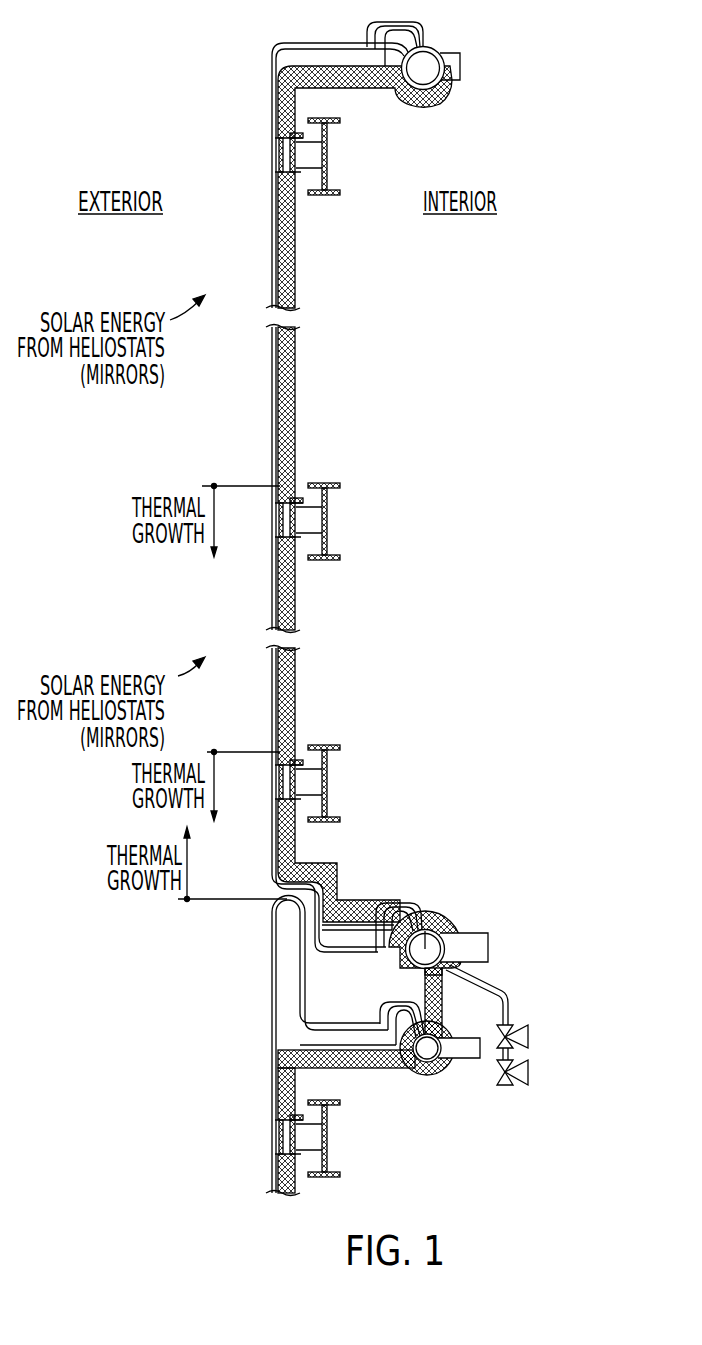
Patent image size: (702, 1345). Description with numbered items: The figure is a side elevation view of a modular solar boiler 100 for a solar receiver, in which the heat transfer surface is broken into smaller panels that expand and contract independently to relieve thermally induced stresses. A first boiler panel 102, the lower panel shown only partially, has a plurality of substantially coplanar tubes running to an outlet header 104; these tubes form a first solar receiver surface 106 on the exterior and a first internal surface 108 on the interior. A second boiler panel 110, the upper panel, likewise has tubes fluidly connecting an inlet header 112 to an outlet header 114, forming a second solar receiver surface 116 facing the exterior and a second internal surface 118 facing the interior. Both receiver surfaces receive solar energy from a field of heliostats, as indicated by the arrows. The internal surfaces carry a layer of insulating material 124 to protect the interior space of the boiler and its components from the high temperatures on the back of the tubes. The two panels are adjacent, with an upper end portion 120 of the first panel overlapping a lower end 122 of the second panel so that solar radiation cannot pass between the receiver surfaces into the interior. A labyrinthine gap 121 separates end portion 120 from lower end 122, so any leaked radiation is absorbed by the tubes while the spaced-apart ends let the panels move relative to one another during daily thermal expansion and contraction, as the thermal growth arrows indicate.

The solar boiler 100 is at (177, 74).
The first boiler panel 102 is at (275, 1172).
The outlet header 104 is at (432, 1078).
The first solar receiver surface 106 is at (273, 1018).
The first internal surface 108 is at (296, 1097).
The second boiler panel 110 is at (272, 400).
The inlet header 112 is at (427, 932).
The outlet header 114 is at (432, 73).
The second solar receiver surface 116 is at (272, 232).
The second internal surface 118 is at (280, 240).
The upper end portion 120 is at (273, 942).
The gap 121 is at (276, 884).
The lower end 122 is at (325, 902).
The layer of insulating material 124 is at (296, 420).